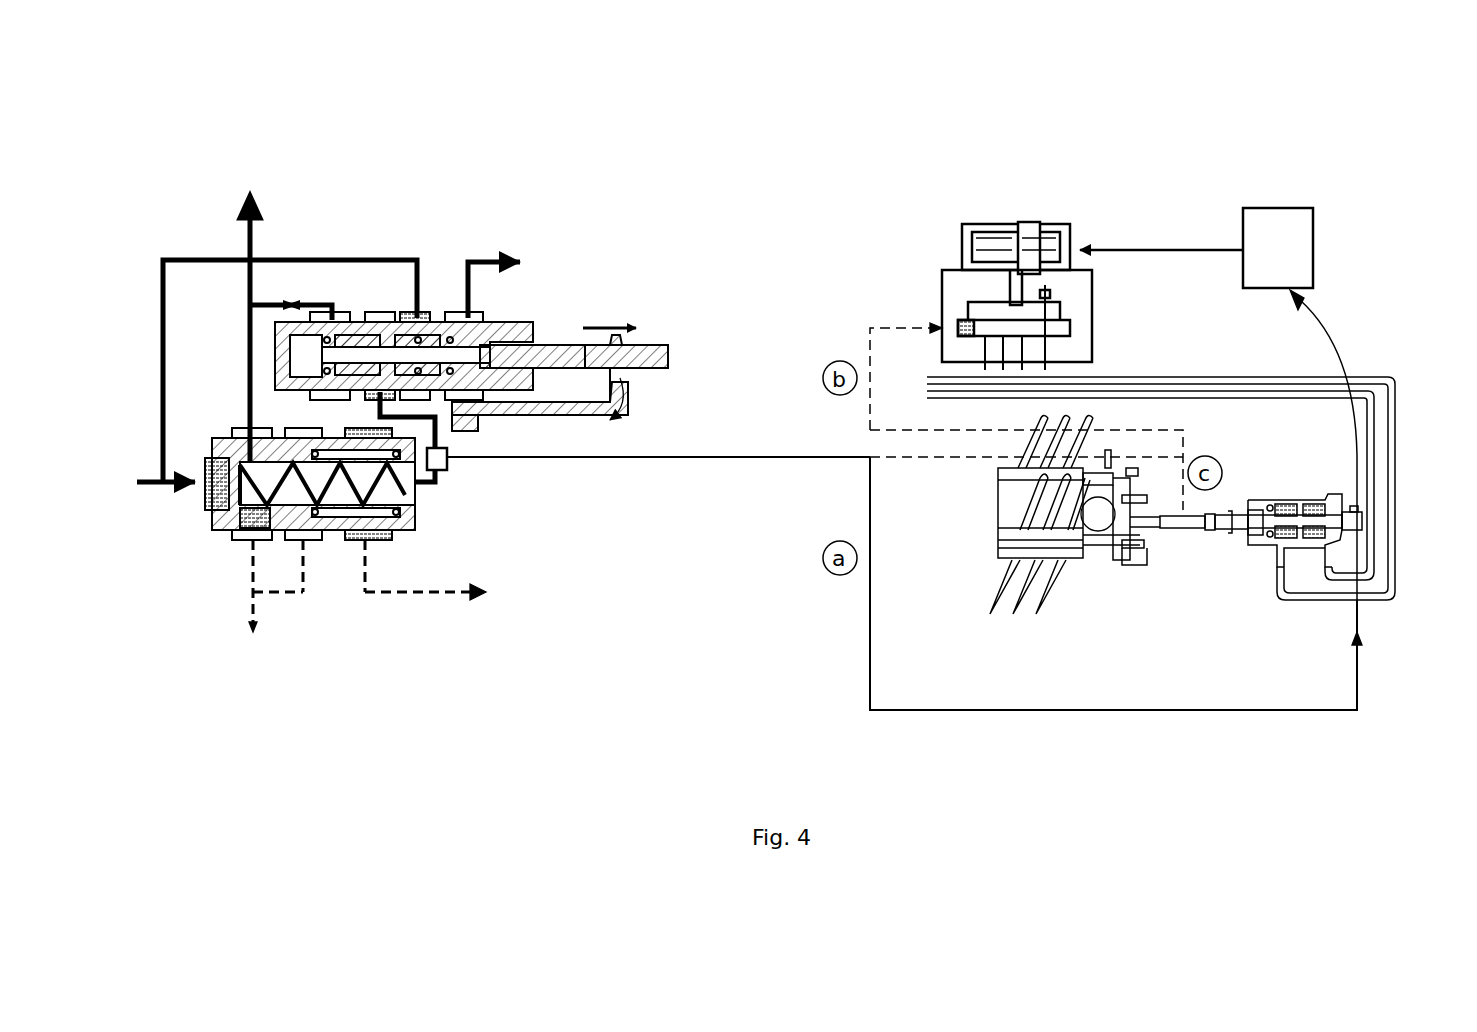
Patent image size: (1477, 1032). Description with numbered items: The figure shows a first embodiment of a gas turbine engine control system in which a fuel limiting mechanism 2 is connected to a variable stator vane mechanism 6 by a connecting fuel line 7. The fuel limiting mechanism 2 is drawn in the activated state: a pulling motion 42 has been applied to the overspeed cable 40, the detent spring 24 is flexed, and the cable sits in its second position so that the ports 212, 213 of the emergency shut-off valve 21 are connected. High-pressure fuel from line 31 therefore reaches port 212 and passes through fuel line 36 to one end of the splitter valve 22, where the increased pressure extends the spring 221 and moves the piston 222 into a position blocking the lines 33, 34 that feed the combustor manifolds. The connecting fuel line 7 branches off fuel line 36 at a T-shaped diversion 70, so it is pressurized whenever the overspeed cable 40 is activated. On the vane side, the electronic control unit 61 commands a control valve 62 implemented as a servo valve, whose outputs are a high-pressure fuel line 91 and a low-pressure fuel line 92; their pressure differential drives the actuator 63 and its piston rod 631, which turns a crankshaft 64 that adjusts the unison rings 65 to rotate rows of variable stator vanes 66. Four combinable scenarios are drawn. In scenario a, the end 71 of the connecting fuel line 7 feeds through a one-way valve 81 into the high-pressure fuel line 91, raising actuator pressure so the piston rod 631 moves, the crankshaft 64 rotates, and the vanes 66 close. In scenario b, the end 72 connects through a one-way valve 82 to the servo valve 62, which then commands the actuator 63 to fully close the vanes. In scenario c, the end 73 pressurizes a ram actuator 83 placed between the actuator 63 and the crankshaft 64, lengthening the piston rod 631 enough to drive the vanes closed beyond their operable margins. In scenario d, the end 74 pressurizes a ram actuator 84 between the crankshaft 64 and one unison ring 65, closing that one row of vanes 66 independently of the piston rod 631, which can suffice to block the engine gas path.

The fuel limiting mechanism 2 is at (342, 228).
The variable stator vane mechanism 6 is at (996, 175).
The connecting fuel line 7 is at (748, 457).
The emergency shut-off valve 21 is at (443, 318).
The splitter valve 22 is at (335, 540).
The detent spring 24 is at (575, 412).
The line 31 is at (163, 430).
The line 33 is at (250, 358).
The line 34 is at (245, 607).
The fuel line 36 is at (433, 485).
The overspeed cable 40 is at (555, 345).
The pulling motion 42 is at (618, 335).
The electronic control unit 61 is at (1278, 205).
The control valve 62 is at (1055, 222).
The actuator 63 is at (1288, 500).
The crankshaft 64 is at (1120, 568).
The unison rings 65 is at (1088, 555).
The variable stator vanes 66 is at (1000, 588).
The T-shaped diversion 70 is at (450, 470).
The end of connecting fuel line 71 is at (1088, 712).
The end of connecting fuel line 72 is at (870, 340).
The end of connecting fuel line 73 is at (985, 432).
The end of connecting fuel line 74 is at (917, 455).
The one-way valve 81 is at (1363, 640).
The one-way valve 82 is at (930, 328).
The ram actuator 83 is at (1200, 530).
The ram actuator 84 is at (1125, 468).
The high-pressure fuel line 91 is at (1380, 425).
The low-pressure fuel line 92 is at (1399, 392).
The port 212 is at (370, 312).
The port 213 is at (408, 312).
The spring 221 is at (370, 500).
The piston 222 is at (240, 515).
The piston rod 631 is at (1210, 512).